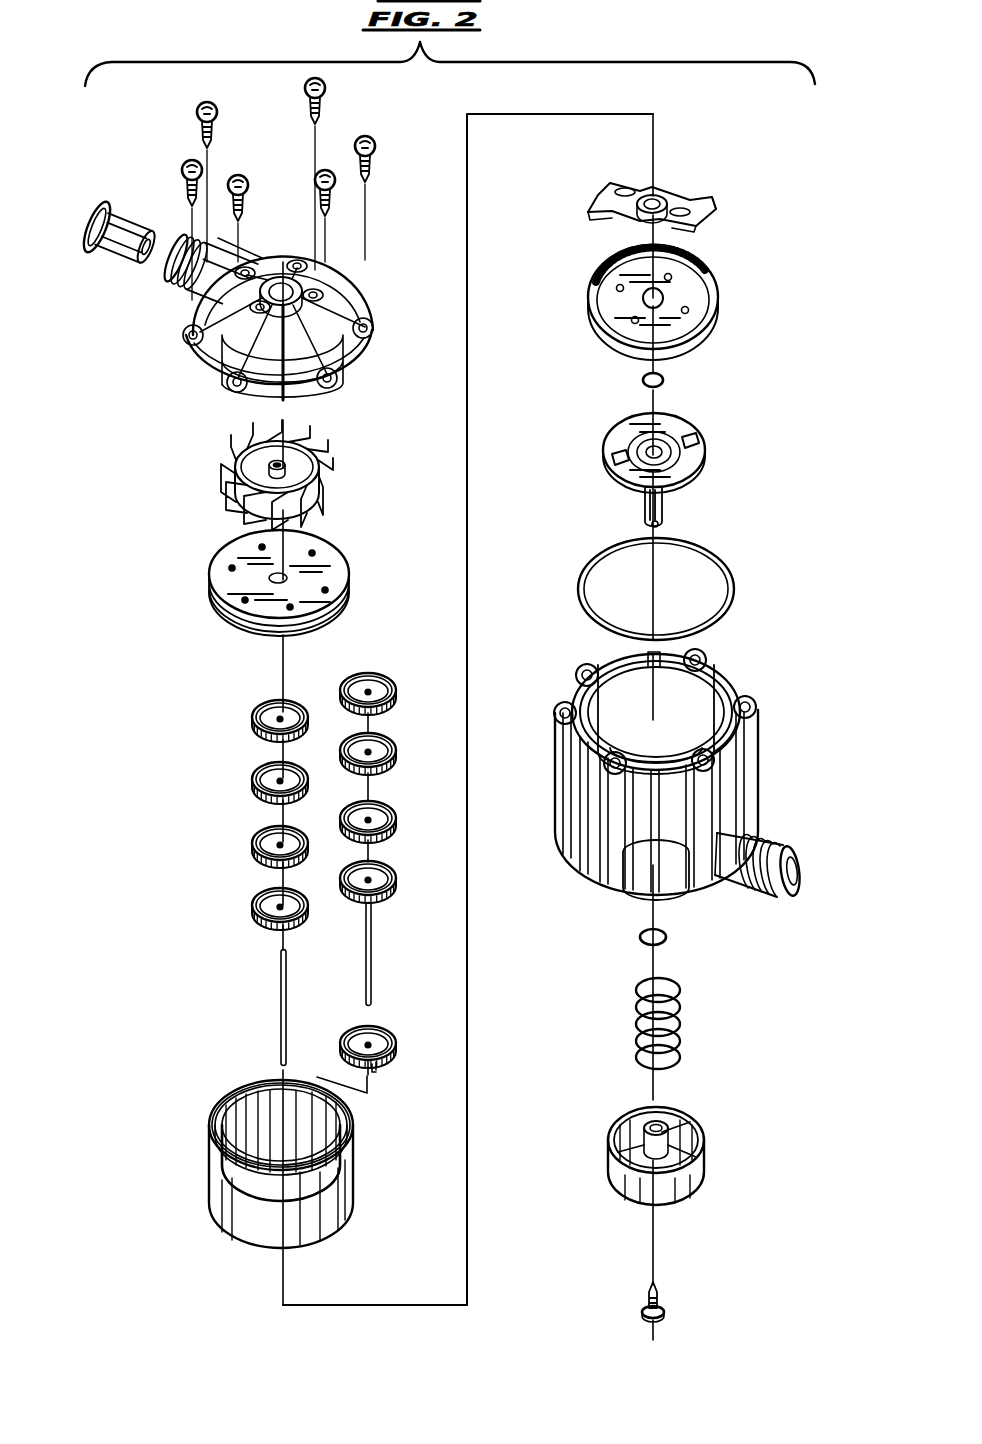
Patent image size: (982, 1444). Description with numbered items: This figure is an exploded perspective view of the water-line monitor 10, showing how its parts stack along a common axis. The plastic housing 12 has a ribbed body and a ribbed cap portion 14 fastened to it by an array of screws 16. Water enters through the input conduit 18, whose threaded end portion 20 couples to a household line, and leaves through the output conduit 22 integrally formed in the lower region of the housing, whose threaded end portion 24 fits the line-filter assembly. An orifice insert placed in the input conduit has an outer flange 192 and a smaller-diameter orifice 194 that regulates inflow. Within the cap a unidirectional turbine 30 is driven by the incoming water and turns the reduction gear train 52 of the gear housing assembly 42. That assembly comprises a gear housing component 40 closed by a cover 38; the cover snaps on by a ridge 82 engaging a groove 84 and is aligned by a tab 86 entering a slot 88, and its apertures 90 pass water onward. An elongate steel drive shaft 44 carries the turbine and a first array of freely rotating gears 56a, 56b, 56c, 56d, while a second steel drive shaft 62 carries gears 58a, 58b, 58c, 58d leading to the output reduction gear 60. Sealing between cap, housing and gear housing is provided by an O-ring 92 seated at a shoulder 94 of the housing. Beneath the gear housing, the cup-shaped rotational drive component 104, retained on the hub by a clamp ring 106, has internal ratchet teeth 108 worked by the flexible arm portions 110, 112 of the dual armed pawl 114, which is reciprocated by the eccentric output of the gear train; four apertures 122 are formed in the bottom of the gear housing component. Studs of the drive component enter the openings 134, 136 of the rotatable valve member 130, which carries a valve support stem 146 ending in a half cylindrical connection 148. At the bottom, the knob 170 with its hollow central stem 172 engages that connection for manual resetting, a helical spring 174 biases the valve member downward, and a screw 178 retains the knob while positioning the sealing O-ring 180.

The monitor 10 is at (418, 238).
The housing 12 is at (750, 766).
The cap portion 14 is at (342, 312).
The screws 16 is at (325, 88).
The input conduit 18 is at (225, 257).
The threaded end portion 20 is at (175, 284).
The output conduit 22 is at (728, 868).
The threaded end portion 24 is at (772, 856).
The turbine 30 is at (330, 480).
The cover 38 is at (348, 577).
The gear housing component 40 is at (222, 1198).
The gear housing assembly 42 is at (180, 733).
The drive shaft 44 is at (288, 992).
The reduction gear train 52 is at (180, 834).
The freely rotating gear 56a is at (252, 714).
The freely rotating gear 56b is at (252, 776).
The freely rotating gear 56c is at (252, 839).
The freely rotating gear 56d is at (252, 902).
The reduction gear stage 58a is at (382, 675).
The gear 58b is at (390, 742).
The gear 58c is at (390, 810).
The gear 58d is at (390, 871).
The output reduction gear 60 is at (393, 1032).
The drive shaft 62 is at (374, 958).
The ridge 82 is at (360, 673).
The groove 84 is at (225, 1103).
The tab 86 is at (340, 616).
The slot 88 is at (345, 1152).
The apertures 90 is at (232, 568).
The O-ring 92 is at (730, 578).
The shoulder 94 is at (720, 678).
The rotational drive component 104 is at (716, 312).
The clamp ring 106 is at (643, 380).
The ratchet teeth 108 is at (614, 262).
The flexible arm portion 110 is at (600, 196).
The flexible arm portion 112 is at (720, 212).
The dual armed pawl 114 is at (665, 197).
The apertures 122 is at (670, 277).
The rotatable valve member 130 is at (780, 466).
The opening 134 is at (697, 438).
The opening 136 is at (612, 460).
The valve support stem 146 is at (665, 503).
The half cylindrical connection 148 is at (660, 524).
The knob 170 is at (702, 1162).
The hollow central stem 172 is at (695, 1118).
The helical spring 174 is at (680, 1008).
The screw 178 is at (662, 1305).
The O-ring 180 is at (640, 937).
The outer flange 192 is at (135, 212).
The orifice 194 is at (150, 260).